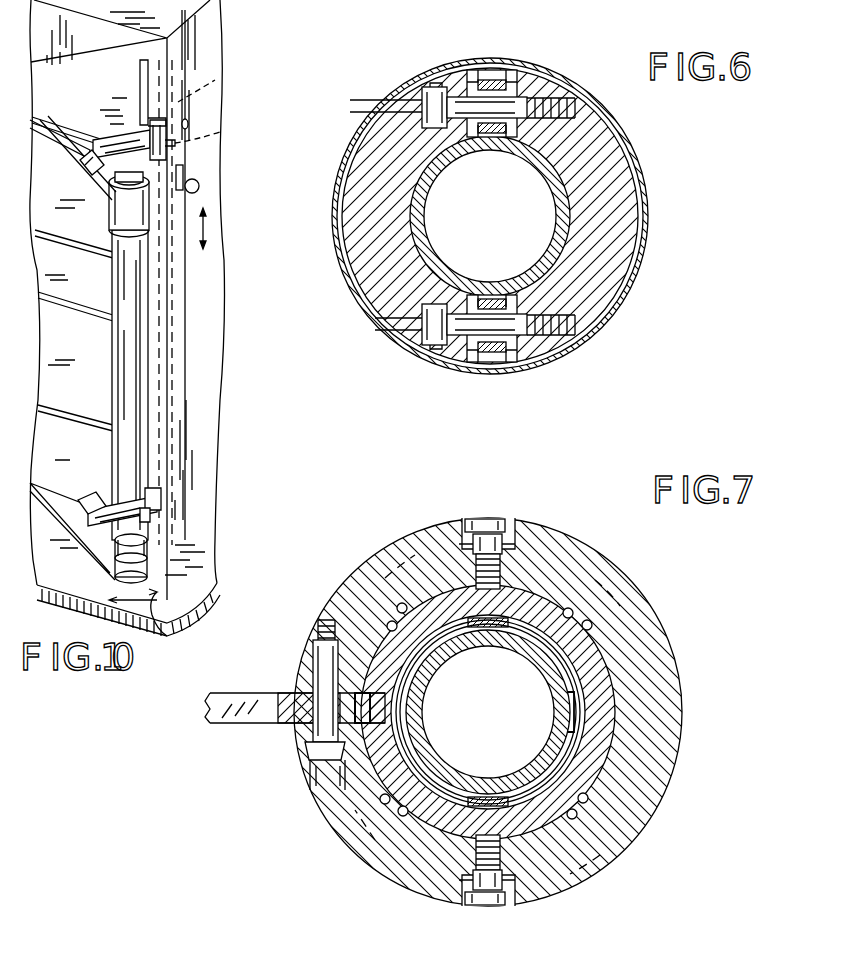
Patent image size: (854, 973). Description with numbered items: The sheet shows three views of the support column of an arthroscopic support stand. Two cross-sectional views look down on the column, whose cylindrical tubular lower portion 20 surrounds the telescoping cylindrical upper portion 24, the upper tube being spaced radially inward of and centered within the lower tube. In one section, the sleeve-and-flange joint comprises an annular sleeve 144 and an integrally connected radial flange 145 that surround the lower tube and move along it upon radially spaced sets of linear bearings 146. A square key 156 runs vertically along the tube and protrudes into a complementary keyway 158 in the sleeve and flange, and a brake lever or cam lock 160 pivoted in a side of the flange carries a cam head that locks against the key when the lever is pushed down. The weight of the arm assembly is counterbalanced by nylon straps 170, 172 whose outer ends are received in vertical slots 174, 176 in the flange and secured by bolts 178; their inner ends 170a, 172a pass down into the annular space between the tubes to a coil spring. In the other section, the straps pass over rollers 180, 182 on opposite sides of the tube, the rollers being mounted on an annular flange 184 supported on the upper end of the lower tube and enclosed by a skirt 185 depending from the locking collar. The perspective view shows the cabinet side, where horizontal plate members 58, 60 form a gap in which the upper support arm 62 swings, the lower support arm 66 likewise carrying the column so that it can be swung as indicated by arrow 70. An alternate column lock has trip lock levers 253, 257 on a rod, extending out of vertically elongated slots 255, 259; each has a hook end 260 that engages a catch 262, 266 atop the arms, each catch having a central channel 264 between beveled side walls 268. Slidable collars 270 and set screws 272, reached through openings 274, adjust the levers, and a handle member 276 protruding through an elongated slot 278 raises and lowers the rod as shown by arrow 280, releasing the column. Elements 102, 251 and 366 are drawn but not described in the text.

In FIG. 6, the cylindrical tubular lower portion 20 is at (634, 140).
In FIG. 7, the cylindrical tubular lower portion 20 is at (612, 679).
In FIG. 10, the cylindrical tubular lower portion 20 is at (112, 356).
In FIG. 6, the telescoping cylindrical upper portion 24 is at (430, 218).
In FIG. 7, the telescoping cylindrical upper portion 24 is at (535, 666).
In FIG. 10, the horizontal plate member 58 is at (57, 97).
In FIG. 10, the horizontal plate member 60 is at (125, 156).
In FIG. 10, the upper support arm 62 is at (59, 144).
In FIG. 10, the lower support arm 66 is at (117, 577).
In FIG. 10, the arrow 70 is at (142, 622).
In FIG. 7, the clamp bolt 102 is at (322, 770).
In FIG. 7, the annular sleeve 144 is at (657, 735).
In FIG. 7, the radial flange 145 is at (662, 771).
In FIG. 7, the linear bearings 146 is at (393, 623).
In FIG. 7, the square key 156 is at (402, 677).
In FIG. 7, the keyway 158 is at (397, 710).
In FIG. 7, the brake lever or cam lock 160 is at (252, 723).
In FIG. 6, the nylon strap 170 is at (497, 355).
In FIG. 7, the nylon strap 170 is at (520, 892).
In FIG. 6, the inner end of strap 170a is at (496, 298).
In FIG. 7, the inner end of strap 170a is at (490, 797).
In FIG. 6, the nylon strap 172 is at (499, 78).
In FIG. 7, the nylon strap 172 is at (522, 548).
In FIG. 6, the inner end of strap 172a is at (497, 136).
In FIG. 7, the inner end of strap 172a is at (494, 628).
In FIG. 7, the vertical slot 174 is at (497, 882).
In FIG. 7, the vertical slot 176 is at (505, 521).
In FIG. 7, the bolt 178 is at (478, 519).
In FIG. 6, the roller 180 is at (474, 355).
In FIG. 6, the roller 182 is at (475, 78).
In FIG. 6, the annular flange 184 is at (634, 210).
In FIG. 6, the skirt 185 is at (634, 244).
In FIG. 10, the guide column 251 is at (176, 250).
In FIG. 10, the trip lock lever 253 is at (152, 125).
In FIG. 10, the vertically elongated slot 255 is at (142, 110).
In FIG. 10, the trip lock lever 257 is at (144, 508).
In FIG. 10, the vertically elongated slot 259 is at (148, 492).
In FIG. 10, the hook end 260 is at (90, 143).
In FIG. 10, the catch 262 is at (83, 168).
In FIG. 10, the central channel 264 is at (85, 142).
In FIG. 10, the catch 266 is at (91, 528).
In FIG. 10, the side wall 268 is at (108, 198).
In FIG. 10, the slidable collar 270 is at (221, 132).
In FIG. 10, the set screw 272 is at (216, 80).
In FIG. 10, the opening 274 is at (191, 124).
In FIG. 10, the handle member 276 is at (200, 186).
In FIG. 10, the elongated slot 278 is at (185, 172).
In FIG. 10, the arrow 280 is at (208, 230).
In FIG. 10, the guide rail 366 is at (186, 310).